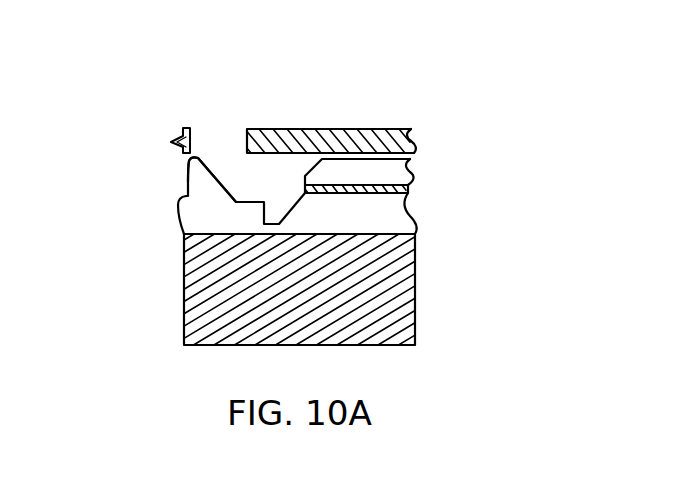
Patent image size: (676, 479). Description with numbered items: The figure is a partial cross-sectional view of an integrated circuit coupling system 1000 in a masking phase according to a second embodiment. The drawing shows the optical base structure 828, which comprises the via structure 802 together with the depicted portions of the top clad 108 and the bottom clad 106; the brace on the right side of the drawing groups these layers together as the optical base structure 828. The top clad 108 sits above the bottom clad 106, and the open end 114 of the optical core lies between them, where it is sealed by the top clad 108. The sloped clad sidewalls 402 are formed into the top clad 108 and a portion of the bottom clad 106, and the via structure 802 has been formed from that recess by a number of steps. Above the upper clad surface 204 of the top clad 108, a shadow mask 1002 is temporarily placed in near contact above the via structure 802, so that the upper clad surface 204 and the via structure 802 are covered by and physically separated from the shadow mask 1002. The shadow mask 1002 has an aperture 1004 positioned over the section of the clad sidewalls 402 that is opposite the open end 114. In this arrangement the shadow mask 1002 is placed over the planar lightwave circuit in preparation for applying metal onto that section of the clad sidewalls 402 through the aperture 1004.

The integrated circuit coupling system 1000 is at (167, 52).
The vertical insertion area structure 802 is at (223, 150).
The shadow mask 1002 is at (164, 138).
The aperture 1004 is at (242, 120).
The clad sidewalls 402 is at (216, 176).
The upper clad surface 204 is at (406, 156).
The top clad 108 is at (394, 178).
The open end 114 is at (305, 189).
The bottom clad 106 is at (383, 220).
The optical base structure 828 is at (430, 160).